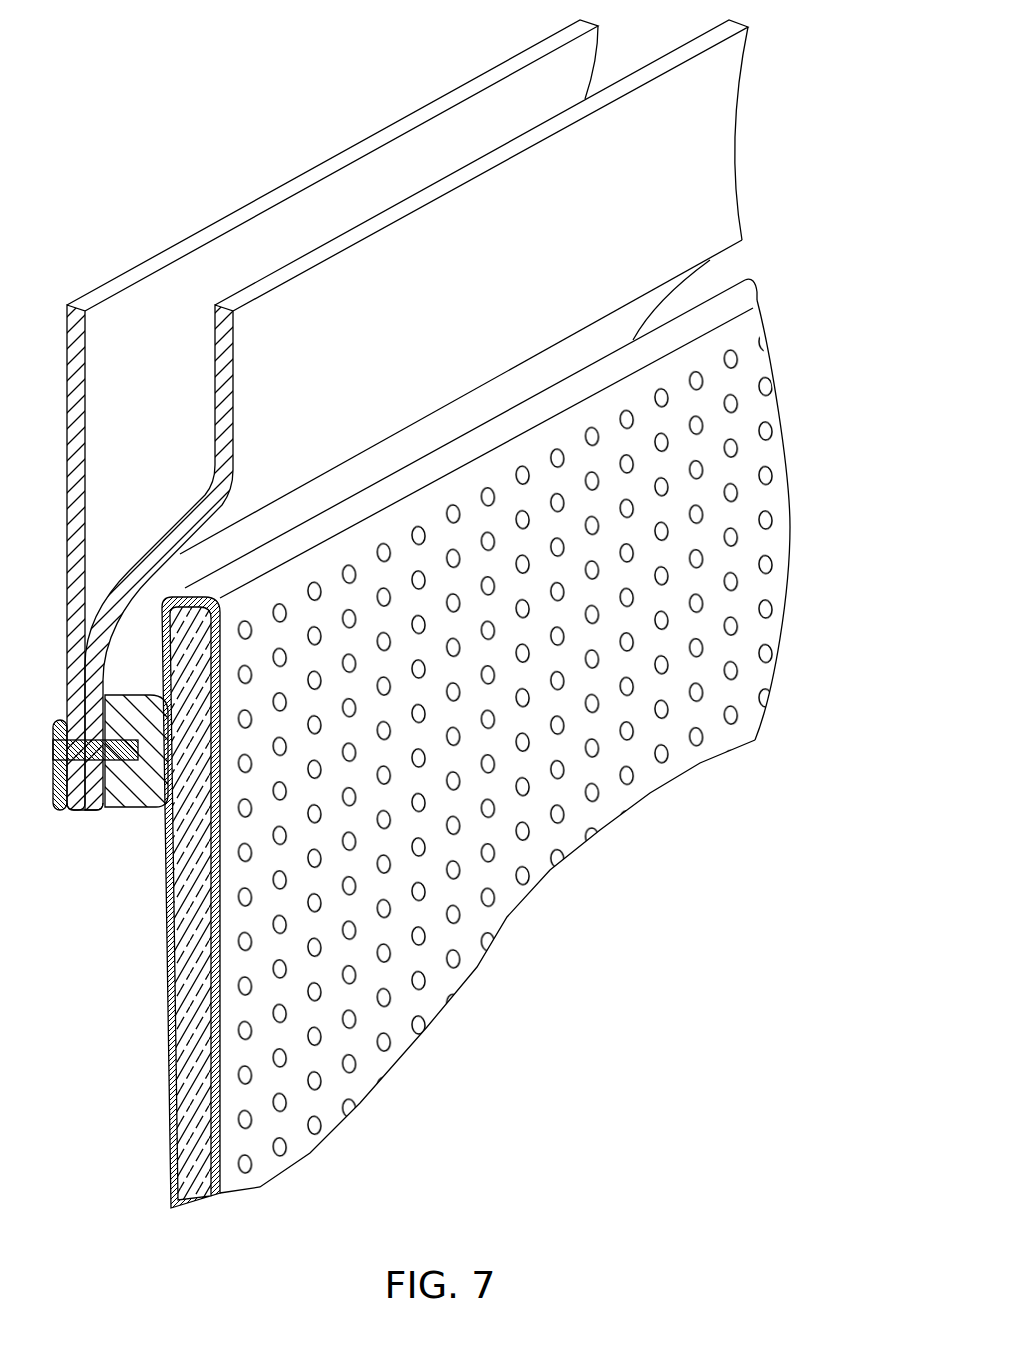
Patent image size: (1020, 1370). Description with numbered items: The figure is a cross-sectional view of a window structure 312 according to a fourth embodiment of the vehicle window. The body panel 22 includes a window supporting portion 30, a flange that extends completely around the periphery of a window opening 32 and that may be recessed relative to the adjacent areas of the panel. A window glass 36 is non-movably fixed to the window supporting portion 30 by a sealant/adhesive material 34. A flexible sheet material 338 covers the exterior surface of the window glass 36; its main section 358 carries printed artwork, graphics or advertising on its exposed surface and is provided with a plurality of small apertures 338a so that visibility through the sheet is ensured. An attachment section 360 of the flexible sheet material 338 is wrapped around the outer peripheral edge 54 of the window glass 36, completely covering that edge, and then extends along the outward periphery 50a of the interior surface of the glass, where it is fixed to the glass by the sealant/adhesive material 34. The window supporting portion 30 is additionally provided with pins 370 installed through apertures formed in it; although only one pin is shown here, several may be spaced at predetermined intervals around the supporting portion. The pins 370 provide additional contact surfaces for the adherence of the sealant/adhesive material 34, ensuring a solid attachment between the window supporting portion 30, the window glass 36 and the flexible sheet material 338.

The window structure 312 is at (185, 165).
The body panel 22 is at (397, 263).
The window supporting portion 30 is at (130, 652).
The window opening 32 is at (74, 812).
The sealant/adhesive material 34 is at (117, 793).
The window glass 36 is at (190, 1022).
The outward periphery of the interior surface 50a is at (155, 780).
The outer peripheral edge 54 is at (190, 600).
The flexible sheet material 338 is at (262, 1160).
The small apertures 338a is at (732, 403).
The main section 358 is at (670, 737).
The attachment section 360 is at (157, 625).
The pins 370 is at (66, 790).